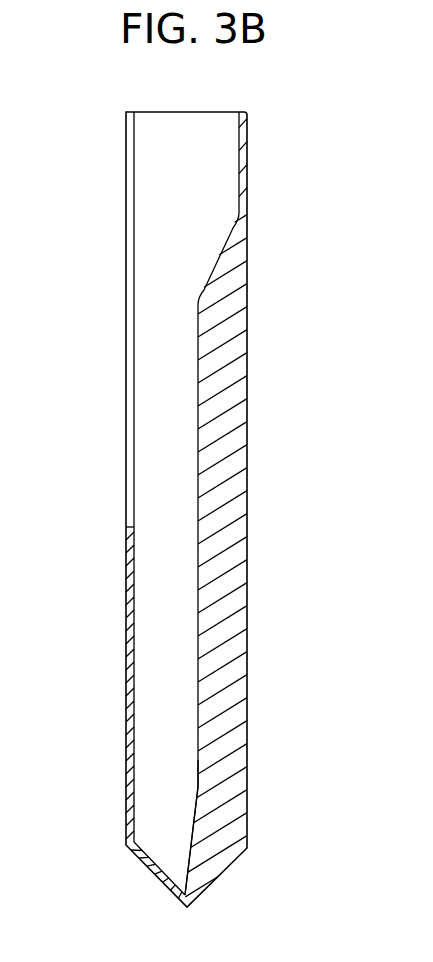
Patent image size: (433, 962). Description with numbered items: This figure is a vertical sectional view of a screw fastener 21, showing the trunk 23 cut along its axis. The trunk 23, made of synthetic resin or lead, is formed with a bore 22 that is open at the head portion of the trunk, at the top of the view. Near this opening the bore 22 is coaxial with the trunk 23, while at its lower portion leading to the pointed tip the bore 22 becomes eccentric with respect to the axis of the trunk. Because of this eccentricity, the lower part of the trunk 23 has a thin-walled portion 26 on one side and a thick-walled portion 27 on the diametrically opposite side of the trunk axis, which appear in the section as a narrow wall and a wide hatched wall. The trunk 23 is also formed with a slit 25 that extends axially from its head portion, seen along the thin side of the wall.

The screw fastener 21 is at (126, 265).
The bore 22 is at (134, 202).
The trunk 23 is at (243, 682).
The slit 25 is at (134, 453).
The thin-walled portion 26 is at (127, 735).
The thick-walled portion 27 is at (241, 757).